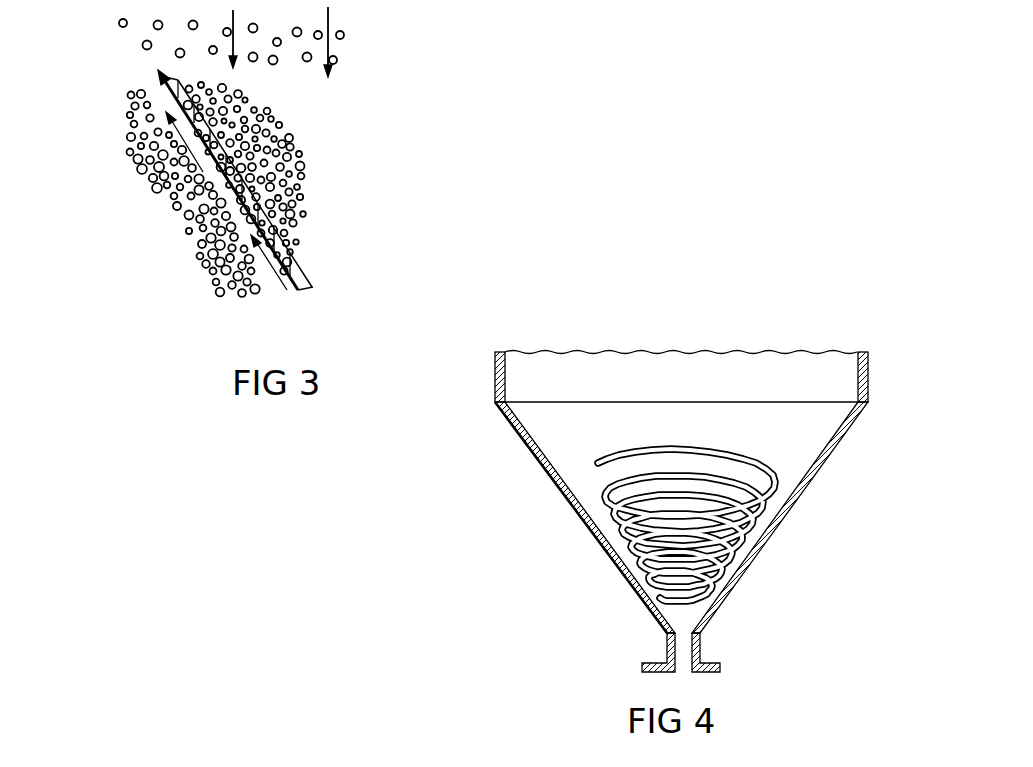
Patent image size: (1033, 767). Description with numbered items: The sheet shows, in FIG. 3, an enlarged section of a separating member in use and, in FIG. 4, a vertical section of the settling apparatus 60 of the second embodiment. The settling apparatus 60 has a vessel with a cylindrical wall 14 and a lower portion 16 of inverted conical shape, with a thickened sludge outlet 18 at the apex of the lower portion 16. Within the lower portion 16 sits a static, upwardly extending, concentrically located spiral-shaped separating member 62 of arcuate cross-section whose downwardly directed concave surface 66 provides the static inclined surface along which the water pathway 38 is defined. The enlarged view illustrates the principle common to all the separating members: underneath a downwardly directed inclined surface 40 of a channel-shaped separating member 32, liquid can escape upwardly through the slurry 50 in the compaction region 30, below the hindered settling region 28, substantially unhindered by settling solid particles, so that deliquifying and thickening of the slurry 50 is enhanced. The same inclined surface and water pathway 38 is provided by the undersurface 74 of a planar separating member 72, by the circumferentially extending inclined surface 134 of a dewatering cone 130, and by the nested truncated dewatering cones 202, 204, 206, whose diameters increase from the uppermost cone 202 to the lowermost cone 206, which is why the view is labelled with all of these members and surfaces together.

In FIG. 3, the intermediate hindered settling region 28 is at (110, 40).
In FIG. 3, the lower compaction region 30 is at (135, 241).
In FIG. 3, the slurry 50 is at (300, 176).
In FIG. 3, the separating member 32 is at (430, 180).
In FIG. 3, the spiral-shaped separating member 62 is at (430, 180).
In FIG. 4, the spiral-shaped separating member 62 is at (753, 443).
In FIG. 3, the planar separating member 72 is at (430, 180).
In FIG. 3, the dewatering cone 130 is at (430, 180).
In FIG. 3, the dewatering cone 202 is at (430, 180).
In FIG. 3, the dewatering cone 204 is at (430, 180).
In FIG. 3, the dewatering cone 206 is at (318, 255).
In FIG. 3, the inclined planar surface 40 is at (332, 180).
In FIG. 3, the concave surface 66 is at (332, 180).
In FIG. 3, the undersurface 74 is at (332, 180).
In FIG. 3, the inclined surface 134 is at (282, 210).
In FIG. 3, the inclined channel 38 is at (291, 310).
In FIG. 4, the cylindrical wall 14 is at (868, 373).
In FIG. 4, the lower portion 16 is at (768, 530).
In FIG. 4, the thickened sludge outlet 18 is at (700, 649).
In FIG. 4, the settling apparatus 60 is at (845, 518).